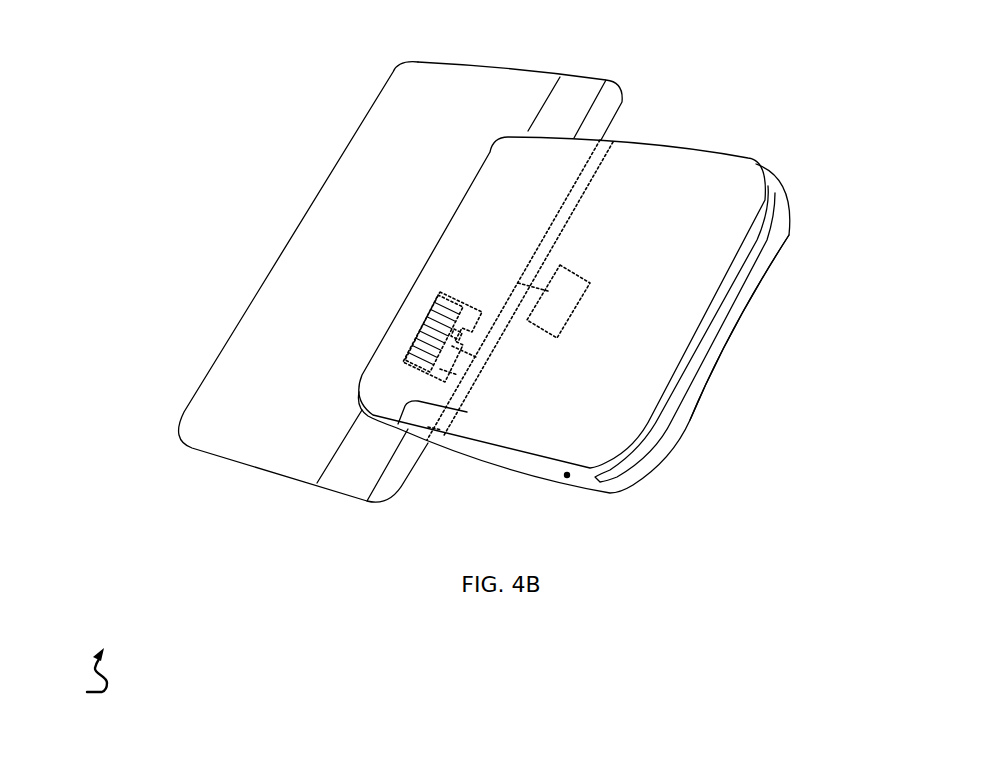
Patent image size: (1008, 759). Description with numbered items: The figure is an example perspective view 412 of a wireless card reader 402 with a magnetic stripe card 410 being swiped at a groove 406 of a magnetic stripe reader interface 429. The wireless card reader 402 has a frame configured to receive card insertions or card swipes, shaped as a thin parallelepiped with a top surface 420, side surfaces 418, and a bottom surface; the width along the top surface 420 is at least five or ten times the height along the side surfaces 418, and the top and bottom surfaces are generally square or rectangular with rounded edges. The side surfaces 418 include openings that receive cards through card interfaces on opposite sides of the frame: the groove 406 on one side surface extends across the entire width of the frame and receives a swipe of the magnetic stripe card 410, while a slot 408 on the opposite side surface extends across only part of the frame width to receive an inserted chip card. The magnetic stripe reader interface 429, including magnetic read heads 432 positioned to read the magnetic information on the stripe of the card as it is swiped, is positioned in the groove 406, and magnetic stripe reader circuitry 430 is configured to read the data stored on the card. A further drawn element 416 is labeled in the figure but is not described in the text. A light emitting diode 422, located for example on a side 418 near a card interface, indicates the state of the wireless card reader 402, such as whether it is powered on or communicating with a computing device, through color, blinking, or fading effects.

The wireless card reader 402 is at (657, 145).
The groove 406 is at (413, 287).
The slot 408 is at (695, 371).
The magnetic stripe card 410 is at (417, 62).
The perspective view 412 is at (81, 708).
The connector 416 is at (454, 414).
The side surfaces 418 is at (771, 242).
The top surface 420 is at (637, 249).
The light emitting diode 422 is at (568, 477).
The magnetic stripe reader interface 429 is at (600, 276).
The magnetic stripe reader circuitry 430 is at (547, 310).
The magnetic read heads 432 is at (458, 362).